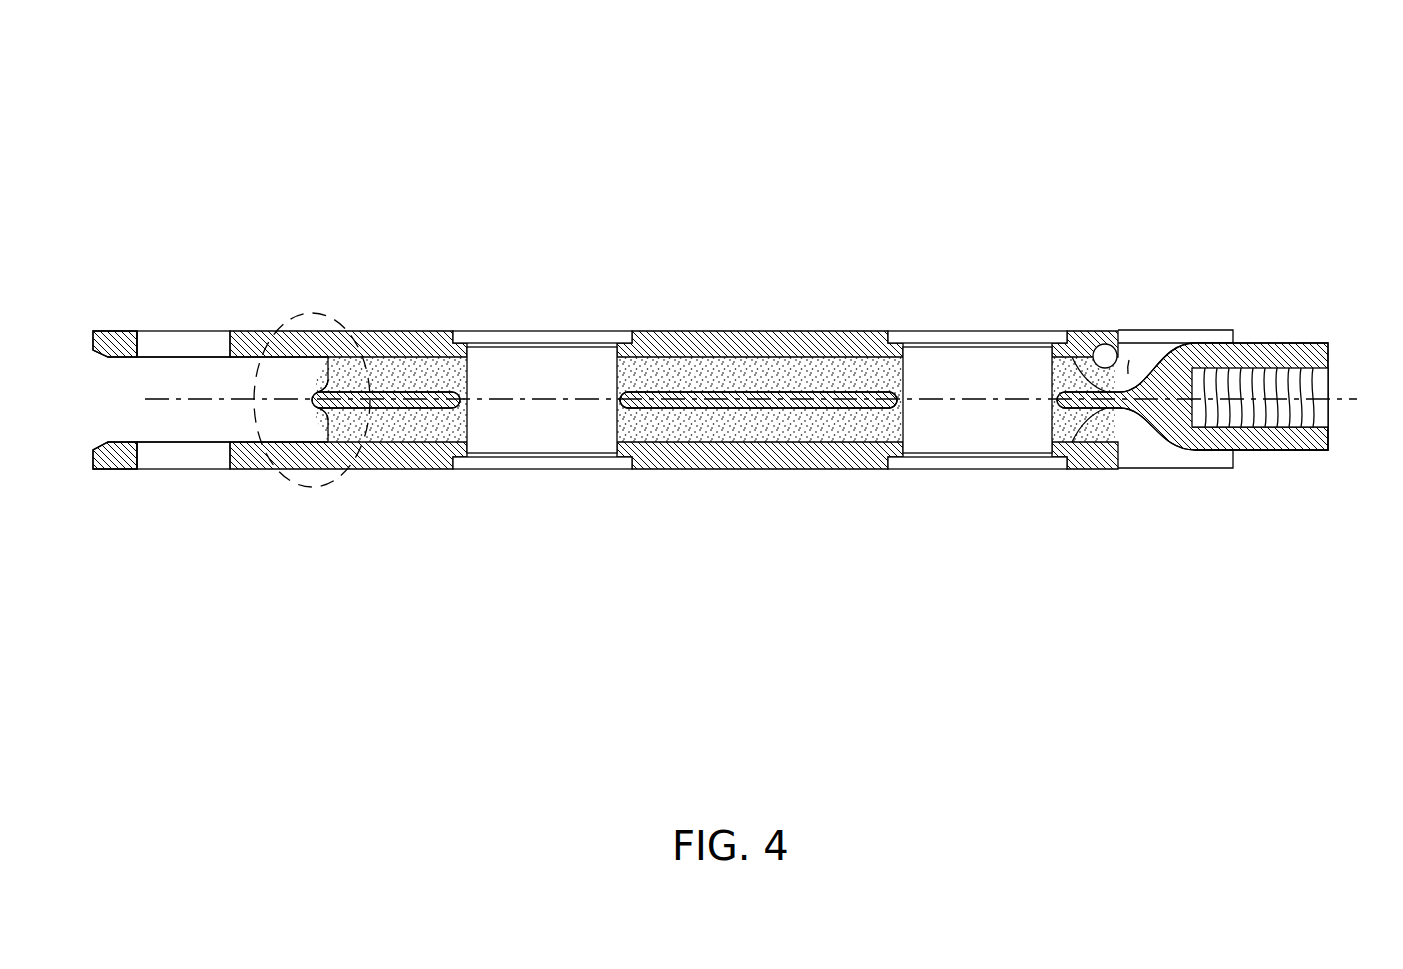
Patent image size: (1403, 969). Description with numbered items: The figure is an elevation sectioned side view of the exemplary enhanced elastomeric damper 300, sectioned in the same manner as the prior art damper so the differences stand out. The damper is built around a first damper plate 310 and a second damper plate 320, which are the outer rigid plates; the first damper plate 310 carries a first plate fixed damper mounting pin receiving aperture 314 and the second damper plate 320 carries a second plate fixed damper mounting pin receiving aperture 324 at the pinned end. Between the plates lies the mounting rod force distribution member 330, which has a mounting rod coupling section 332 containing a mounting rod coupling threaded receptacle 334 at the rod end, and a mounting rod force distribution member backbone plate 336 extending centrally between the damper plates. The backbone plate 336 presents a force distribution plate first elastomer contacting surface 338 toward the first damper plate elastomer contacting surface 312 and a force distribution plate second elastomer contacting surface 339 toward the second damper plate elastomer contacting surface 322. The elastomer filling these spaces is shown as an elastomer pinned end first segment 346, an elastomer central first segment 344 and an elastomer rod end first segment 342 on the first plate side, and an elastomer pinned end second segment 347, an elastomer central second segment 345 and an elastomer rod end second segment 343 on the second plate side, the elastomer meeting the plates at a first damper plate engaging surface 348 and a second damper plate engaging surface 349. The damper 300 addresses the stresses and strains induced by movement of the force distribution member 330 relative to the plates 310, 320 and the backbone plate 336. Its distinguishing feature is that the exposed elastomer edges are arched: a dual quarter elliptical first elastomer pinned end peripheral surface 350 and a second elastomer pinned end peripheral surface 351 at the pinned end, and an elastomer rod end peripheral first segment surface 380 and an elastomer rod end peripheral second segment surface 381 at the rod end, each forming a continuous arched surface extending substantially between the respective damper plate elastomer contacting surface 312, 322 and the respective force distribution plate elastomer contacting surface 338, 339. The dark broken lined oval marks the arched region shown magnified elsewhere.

The elastomeric damper 300 is at (1018, 88).
The first damper plate 310 is at (605, 311).
The first damper plate elastomer contacting surface 312 is at (250, 357).
The first plate fixed damper mounting pin receiving aperture 314 is at (178, 347).
The second damper plate 320 is at (605, 476).
The second damper plate elastomer contacting surface 322 is at (250, 442).
The second plate fixed damper mounting pin receiving aperture 324 is at (178, 457).
The mounting rod force distribution member 330 is at (1226, 390).
The mounting rod coupling section 332 is at (1313, 443).
The mounting rod coupling threaded receptacle 334 is at (1252, 397).
The mounting rod force distribution member backbone plate 336 is at (355, 408).
The force distribution plate first elastomer contacting surface 338 is at (657, 392).
The force distribution plate second elastomer contacting surface 339 is at (657, 408).
The elastomer rod end first segment 342 is at (1072, 342).
The elastomer rod end second segment 343 is at (1077, 428).
The elastomer central first segment 344 is at (823, 378).
The elastomer central second segment 345 is at (815, 425).
The elastomer pinned end first segment 346 is at (405, 380).
The elastomer pinned end second segment 347 is at (405, 425).
The first damper plate engaging surface 348 is at (853, 357).
The second damper plate engaging surface 349 is at (858, 404).
The first elastomer pinned end peripheral surface 350 is at (322, 378).
The second elastomer pinned end peripheral surface 351 is at (322, 422).
The elastomer rod end peripheral first segment surface 380 is at (1112, 345).
The elastomer rod end peripheral second segment surface 381 is at (1100, 410).